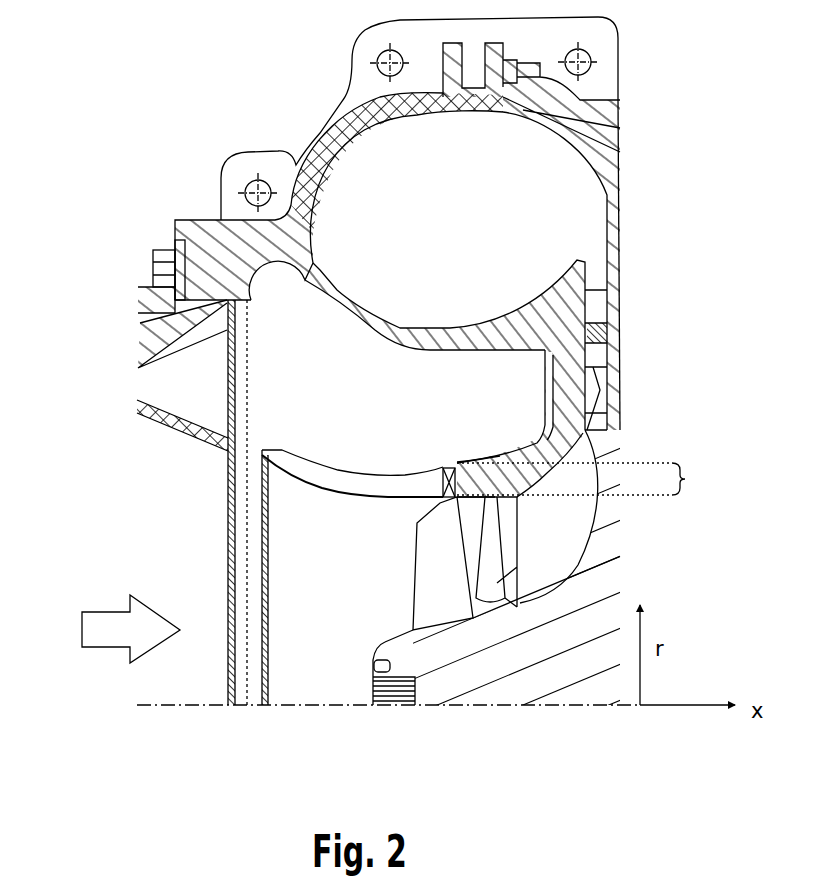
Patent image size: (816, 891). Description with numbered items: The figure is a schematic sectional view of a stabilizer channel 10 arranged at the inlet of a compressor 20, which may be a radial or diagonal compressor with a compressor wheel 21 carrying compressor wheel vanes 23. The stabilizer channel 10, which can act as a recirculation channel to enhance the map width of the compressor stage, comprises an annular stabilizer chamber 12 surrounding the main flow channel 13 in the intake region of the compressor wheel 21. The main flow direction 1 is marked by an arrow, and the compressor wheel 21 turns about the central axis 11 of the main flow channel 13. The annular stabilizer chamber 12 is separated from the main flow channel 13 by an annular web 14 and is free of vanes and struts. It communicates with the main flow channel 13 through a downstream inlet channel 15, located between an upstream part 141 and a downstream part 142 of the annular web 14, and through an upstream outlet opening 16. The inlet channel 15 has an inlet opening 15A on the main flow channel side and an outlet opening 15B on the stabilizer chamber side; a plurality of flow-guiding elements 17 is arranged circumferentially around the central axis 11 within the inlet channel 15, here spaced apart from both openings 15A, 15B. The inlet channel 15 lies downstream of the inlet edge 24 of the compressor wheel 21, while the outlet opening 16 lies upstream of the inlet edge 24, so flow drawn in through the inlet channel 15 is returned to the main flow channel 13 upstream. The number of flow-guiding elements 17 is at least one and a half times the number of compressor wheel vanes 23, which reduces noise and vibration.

The main flow direction 1 is at (147, 641).
The stabilizer channel 10 is at (278, 331).
The central axis 11 is at (288, 710).
The annular stabilizer chamber 12 is at (319, 369).
The main flow channel 13 is at (304, 597).
The annular web 14 is at (407, 465).
The upstream part of the annular web 141 is at (323, 476).
The downstream part of the annular web 142 is at (533, 447).
The inlet channel 15 is at (586, 479).
The inlet opening of the inlet channel 15A is at (443, 501).
The outlet opening of the inlet channel 15B is at (449, 463).
The outlet opening of the stabilizer chamber 16 is at (238, 458).
The flow-guiding elements 17 is at (442, 479).
The compressor 20 is at (672, 81).
The compressor wheel 21 is at (478, 683).
The compressor wheel vanes 23 is at (423, 610).
The inlet edge of the compressor wheel 24 is at (402, 581).